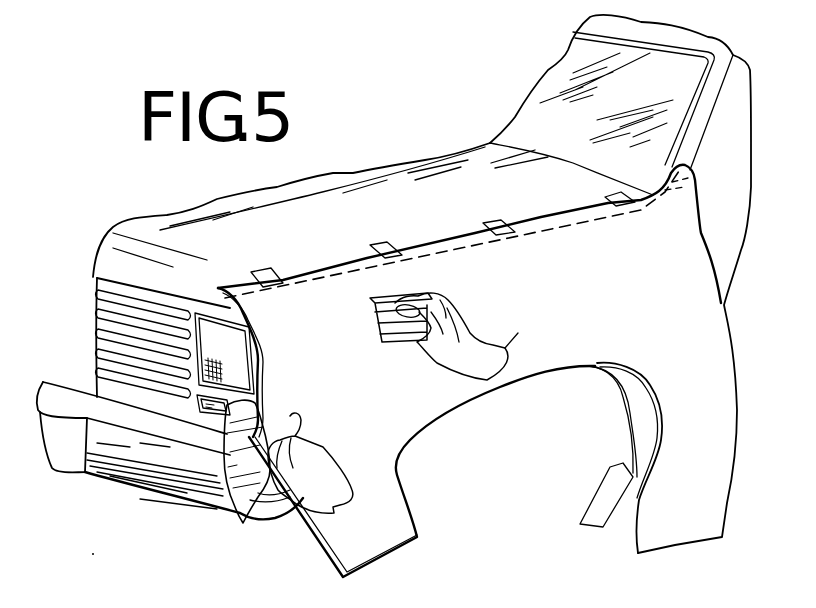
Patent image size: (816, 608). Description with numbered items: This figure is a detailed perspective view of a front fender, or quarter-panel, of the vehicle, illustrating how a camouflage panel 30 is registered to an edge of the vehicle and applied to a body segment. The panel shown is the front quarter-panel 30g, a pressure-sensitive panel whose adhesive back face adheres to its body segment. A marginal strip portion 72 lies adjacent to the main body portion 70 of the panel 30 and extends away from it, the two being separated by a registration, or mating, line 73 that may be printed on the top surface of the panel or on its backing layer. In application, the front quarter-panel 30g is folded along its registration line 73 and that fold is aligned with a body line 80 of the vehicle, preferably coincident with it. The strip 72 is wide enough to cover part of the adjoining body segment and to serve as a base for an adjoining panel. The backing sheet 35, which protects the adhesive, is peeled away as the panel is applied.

The panel 30 is at (622, 305).
The front quarter-panel 30g is at (380, 393).
The backing sheet 35 is at (238, 490).
The main body portion 70 is at (716, 352).
The marginal strip portion 72 is at (536, 224).
The registration line 73 is at (530, 232).
The body line 80 is at (580, 226).